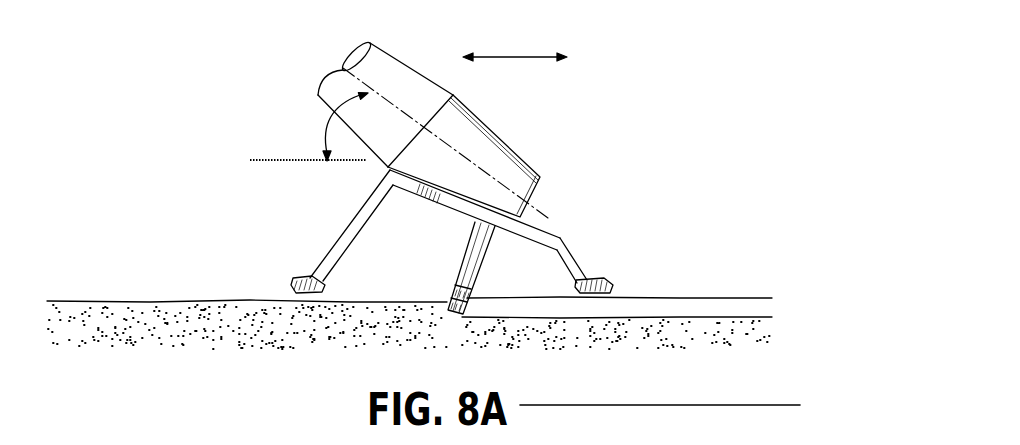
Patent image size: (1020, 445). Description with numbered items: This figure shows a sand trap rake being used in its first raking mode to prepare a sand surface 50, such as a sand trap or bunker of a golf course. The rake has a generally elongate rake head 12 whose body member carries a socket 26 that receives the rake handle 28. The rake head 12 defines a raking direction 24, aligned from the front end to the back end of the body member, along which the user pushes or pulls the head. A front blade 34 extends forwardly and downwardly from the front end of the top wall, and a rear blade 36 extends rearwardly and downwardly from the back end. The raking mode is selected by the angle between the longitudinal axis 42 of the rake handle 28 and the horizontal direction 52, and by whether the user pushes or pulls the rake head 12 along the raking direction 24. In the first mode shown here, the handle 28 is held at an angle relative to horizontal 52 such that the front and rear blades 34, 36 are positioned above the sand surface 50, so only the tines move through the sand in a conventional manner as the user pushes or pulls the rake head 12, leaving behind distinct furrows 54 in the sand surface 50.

The rake head 12 is at (451, 160).
The raking direction 24 is at (533, 53).
The socket 26 is at (502, 125).
The rake handle 28 is at (423, 77).
The front blade 34 is at (583, 267).
The rear blade 36 is at (352, 221).
The longitudinal axis 42 is at (345, 70).
The sand surface 50 is at (758, 297).
The horizontal direction 52 is at (267, 159).
The furrows 54 is at (668, 315).